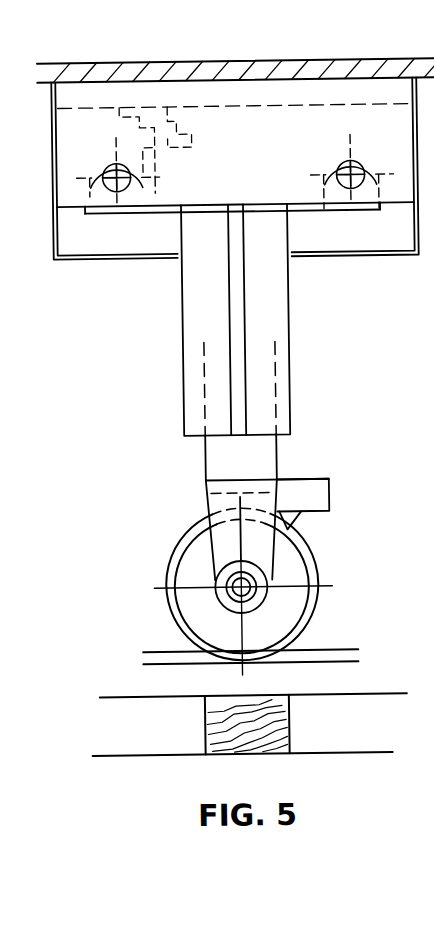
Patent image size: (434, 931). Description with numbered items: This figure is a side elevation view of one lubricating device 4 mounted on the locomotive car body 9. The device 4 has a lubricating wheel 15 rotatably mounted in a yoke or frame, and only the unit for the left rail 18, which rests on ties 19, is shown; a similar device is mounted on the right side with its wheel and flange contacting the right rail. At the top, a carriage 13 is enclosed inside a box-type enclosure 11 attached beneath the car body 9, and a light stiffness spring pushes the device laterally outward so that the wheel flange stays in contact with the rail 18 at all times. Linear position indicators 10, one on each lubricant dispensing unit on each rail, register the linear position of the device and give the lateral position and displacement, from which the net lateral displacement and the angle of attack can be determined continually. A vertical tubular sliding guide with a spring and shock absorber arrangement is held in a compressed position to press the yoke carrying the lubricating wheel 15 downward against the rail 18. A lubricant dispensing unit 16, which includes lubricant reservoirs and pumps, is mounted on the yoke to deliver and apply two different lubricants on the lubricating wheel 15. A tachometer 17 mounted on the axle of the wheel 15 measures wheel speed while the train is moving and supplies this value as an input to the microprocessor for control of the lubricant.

The locomotive car body 9 is at (253, 61).
The linear position indicators 10 is at (179, 116).
The box-type enclosure 11 is at (152, 258).
The carriage 13 is at (163, 205).
The lubricating device 4 is at (290, 356).
The lubricating wheel 15 is at (170, 546).
The lubricant dispensing unit 16 is at (311, 499).
The tachometer 17 is at (253, 580).
The left rail 18 is at (154, 676).
The ties 19 is at (151, 724).